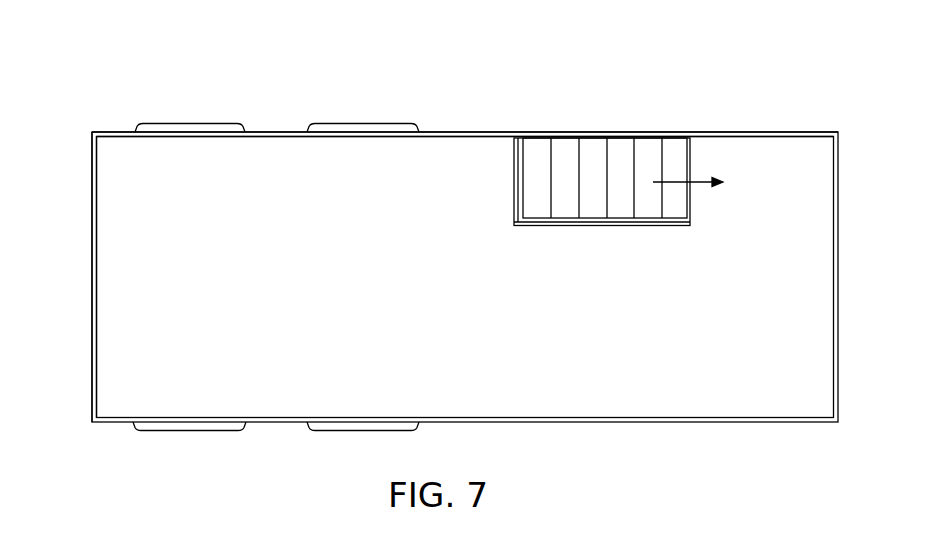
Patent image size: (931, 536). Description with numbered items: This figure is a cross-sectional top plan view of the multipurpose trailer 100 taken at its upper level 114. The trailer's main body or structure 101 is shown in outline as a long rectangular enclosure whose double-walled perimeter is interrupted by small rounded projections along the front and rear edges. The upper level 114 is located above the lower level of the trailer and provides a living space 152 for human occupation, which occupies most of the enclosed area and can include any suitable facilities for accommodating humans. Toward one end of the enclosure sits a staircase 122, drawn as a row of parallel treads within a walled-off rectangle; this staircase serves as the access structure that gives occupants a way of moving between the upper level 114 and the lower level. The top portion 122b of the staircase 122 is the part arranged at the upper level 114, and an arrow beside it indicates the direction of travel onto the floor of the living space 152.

The multipurpose trailer 100 is at (238, 77).
The main body 101 is at (111, 118).
The upper level 114 is at (474, 106).
The staircase 122 is at (618, 152).
The top portion 122b is at (648, 147).
The living space 152 is at (358, 286).